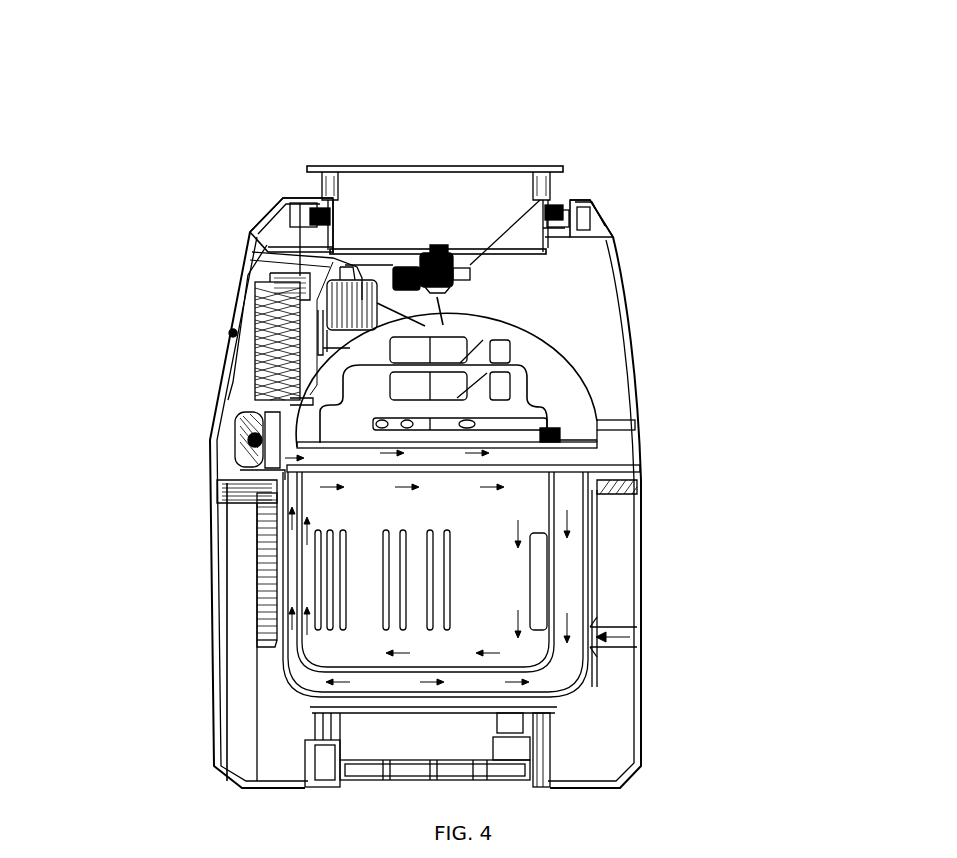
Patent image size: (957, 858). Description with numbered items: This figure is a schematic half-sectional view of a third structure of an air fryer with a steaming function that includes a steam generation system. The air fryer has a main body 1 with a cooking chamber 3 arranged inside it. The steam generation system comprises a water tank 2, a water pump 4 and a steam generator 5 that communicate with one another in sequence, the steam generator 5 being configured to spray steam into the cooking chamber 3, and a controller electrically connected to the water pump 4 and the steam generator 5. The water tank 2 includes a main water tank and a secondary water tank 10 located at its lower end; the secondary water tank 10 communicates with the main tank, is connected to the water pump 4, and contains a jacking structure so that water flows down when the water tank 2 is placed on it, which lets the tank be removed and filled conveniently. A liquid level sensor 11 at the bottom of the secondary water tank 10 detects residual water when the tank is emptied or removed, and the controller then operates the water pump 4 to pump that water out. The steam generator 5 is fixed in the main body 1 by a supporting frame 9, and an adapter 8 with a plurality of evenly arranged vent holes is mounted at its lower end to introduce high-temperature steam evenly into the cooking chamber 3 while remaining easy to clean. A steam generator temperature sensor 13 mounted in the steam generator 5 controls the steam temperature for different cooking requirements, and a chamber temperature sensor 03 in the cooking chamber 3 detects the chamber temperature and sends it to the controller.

The main body 1 is at (643, 533).
The water tank 2 is at (441, 200).
The cooking chamber 3 is at (592, 630).
The water pump 4 is at (368, 282).
The steam generator 5 is at (241, 275).
The steam adapter 8 is at (237, 440).
The steam generator supporting frame 9 is at (283, 198).
The secondary water tank 10 is at (573, 197).
The water level sensor 11 is at (405, 268).
The steam generator temperature sensor 13 is at (217, 372).
The chamber temperature sensor 03 is at (550, 432).